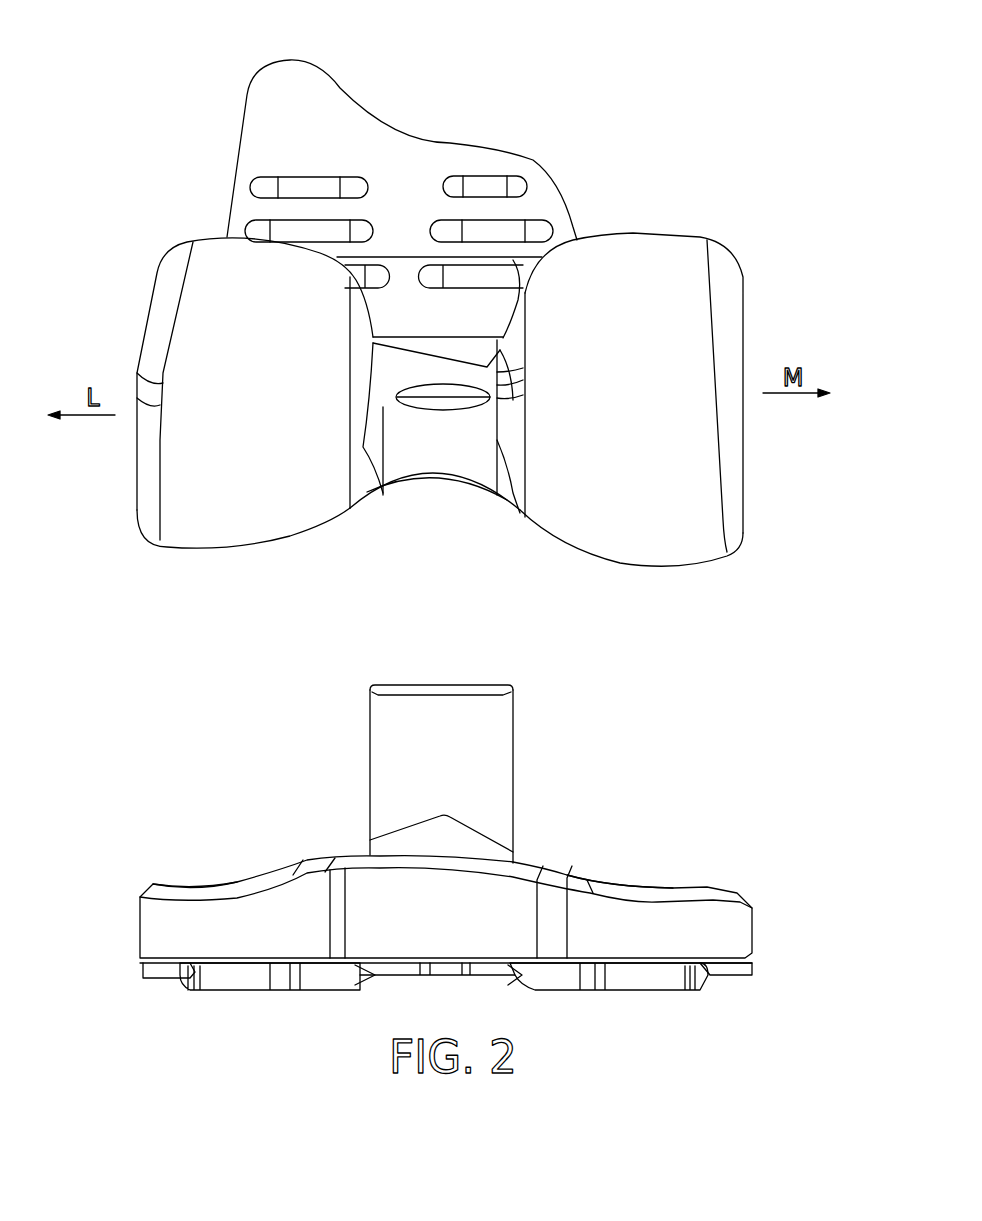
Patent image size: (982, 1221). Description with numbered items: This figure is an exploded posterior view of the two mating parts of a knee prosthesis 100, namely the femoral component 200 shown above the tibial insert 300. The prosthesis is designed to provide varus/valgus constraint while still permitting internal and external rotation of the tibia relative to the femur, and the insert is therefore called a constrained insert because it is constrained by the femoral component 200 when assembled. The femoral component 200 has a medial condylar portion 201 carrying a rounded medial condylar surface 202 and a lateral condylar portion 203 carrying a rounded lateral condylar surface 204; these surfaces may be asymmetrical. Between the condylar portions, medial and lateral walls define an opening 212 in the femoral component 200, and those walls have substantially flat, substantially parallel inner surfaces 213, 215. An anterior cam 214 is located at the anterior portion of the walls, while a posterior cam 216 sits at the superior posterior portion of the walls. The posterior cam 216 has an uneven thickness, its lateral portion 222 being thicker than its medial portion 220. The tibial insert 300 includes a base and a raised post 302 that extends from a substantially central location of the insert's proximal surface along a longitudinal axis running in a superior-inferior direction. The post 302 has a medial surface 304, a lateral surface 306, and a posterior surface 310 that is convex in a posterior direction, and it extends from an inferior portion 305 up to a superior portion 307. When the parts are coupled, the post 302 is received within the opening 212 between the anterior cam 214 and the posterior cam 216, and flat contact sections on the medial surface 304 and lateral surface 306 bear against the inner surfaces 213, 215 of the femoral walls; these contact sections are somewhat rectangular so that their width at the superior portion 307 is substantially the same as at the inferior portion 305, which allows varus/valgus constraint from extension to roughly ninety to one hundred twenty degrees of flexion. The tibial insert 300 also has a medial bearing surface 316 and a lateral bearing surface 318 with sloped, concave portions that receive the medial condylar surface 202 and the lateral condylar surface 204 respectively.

The knee prosthesis 100 is at (683, 147).
The femoral component 200 is at (437, 375).
The medial condylar portion 201 is at (720, 538).
The medial condylar surface 202 is at (670, 553).
The lateral condylar portion 203 is at (167, 528).
The lateral condylar surface 204 is at (213, 540).
The opening 212 is at (418, 440).
The inner surface 213 is at (512, 470).
The anterior cam 214 is at (440, 453).
The inner surface 215 is at (383, 480).
The posterior cam 216 is at (390, 383).
The medial portion 220 is at (483, 350).
The lateral portion 222 is at (373, 345).
The tibial insert 300 is at (437, 824).
The post 302 is at (517, 693).
The medial surface 304 is at (513, 762).
The inferior portion 305 is at (487, 853).
The lateral surface 306 is at (370, 775).
The superior portion 307 is at (382, 720).
The posterior surface 310 is at (449, 761).
The medial bearing surface 316 is at (623, 883).
The lateral bearing surface 318 is at (217, 880).